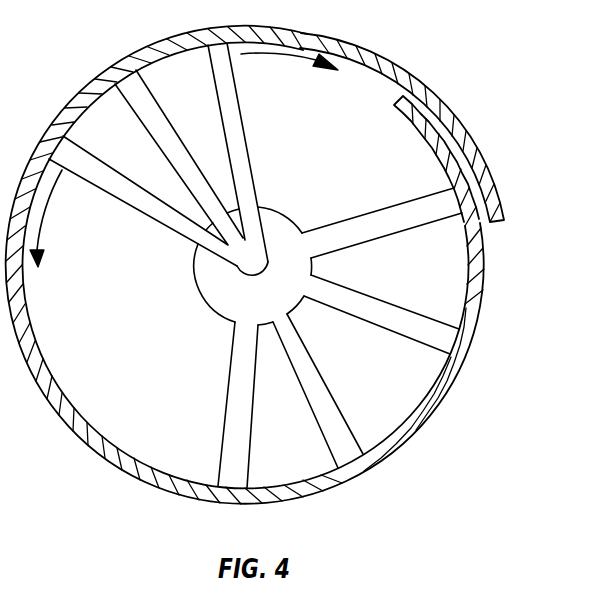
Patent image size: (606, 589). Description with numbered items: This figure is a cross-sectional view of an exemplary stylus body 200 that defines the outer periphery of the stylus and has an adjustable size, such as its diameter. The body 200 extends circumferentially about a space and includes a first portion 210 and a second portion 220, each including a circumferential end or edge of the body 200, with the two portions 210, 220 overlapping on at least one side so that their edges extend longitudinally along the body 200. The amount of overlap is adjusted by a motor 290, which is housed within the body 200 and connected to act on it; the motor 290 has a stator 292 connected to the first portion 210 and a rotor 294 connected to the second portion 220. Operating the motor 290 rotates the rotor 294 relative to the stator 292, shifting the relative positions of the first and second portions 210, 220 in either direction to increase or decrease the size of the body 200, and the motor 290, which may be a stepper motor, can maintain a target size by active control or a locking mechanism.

The body 200 is at (72, 100).
The first portion 210 is at (398, 126).
The second portion 220 is at (488, 167).
The motor 290 is at (207, 310).
The stator 292 is at (234, 300).
The rotor 294 is at (250, 262).